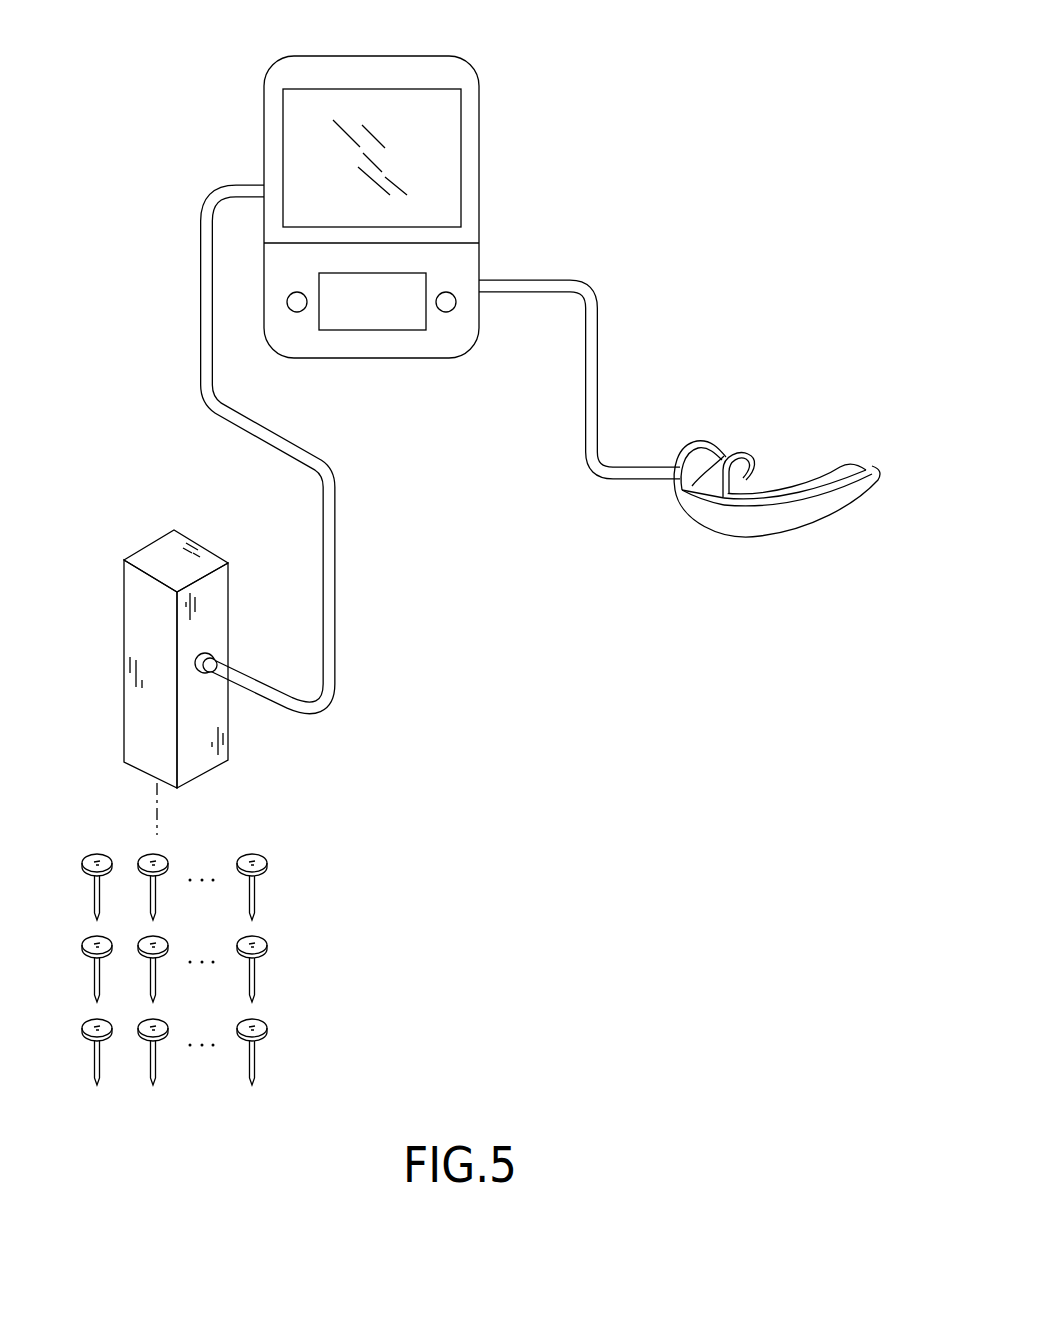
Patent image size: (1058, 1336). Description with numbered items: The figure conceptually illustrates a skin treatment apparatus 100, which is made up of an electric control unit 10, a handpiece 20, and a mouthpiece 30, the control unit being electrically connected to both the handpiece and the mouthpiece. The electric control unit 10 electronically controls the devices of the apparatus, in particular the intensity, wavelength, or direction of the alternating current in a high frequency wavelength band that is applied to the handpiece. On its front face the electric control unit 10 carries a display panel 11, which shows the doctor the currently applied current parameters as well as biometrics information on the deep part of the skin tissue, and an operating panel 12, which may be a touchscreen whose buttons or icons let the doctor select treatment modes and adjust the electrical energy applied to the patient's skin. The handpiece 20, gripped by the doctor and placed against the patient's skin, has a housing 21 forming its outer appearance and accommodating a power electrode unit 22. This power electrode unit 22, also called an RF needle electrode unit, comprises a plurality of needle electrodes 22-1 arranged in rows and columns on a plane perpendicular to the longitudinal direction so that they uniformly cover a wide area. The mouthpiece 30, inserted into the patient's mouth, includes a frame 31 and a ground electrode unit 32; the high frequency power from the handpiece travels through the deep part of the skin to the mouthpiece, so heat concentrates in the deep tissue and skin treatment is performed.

The skin treatment apparatus 100 is at (741, 45).
The electric control unit 10 is at (384, 230).
The display panel 11 is at (290, 158).
The operating panel 12 is at (382, 313).
The handpiece 20 is at (148, 637).
The housing 21 is at (135, 652).
The power electrode unit 22 is at (230, 935).
The needle electrodes 22-1 is at (258, 863).
The mouthpiece 30 is at (773, 475).
The frame 31 is at (750, 466).
The ground electrode unit 32 is at (718, 517).